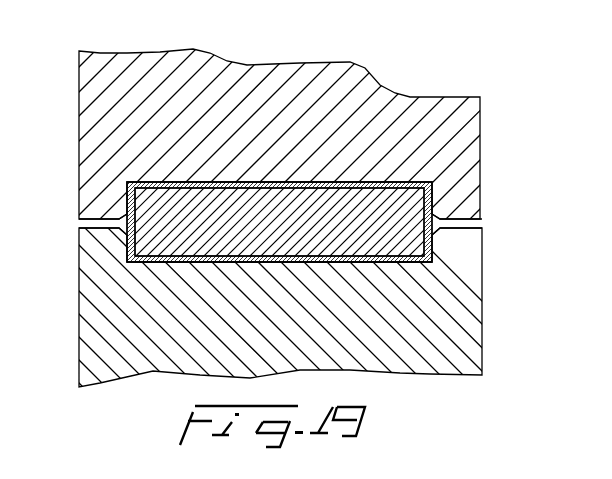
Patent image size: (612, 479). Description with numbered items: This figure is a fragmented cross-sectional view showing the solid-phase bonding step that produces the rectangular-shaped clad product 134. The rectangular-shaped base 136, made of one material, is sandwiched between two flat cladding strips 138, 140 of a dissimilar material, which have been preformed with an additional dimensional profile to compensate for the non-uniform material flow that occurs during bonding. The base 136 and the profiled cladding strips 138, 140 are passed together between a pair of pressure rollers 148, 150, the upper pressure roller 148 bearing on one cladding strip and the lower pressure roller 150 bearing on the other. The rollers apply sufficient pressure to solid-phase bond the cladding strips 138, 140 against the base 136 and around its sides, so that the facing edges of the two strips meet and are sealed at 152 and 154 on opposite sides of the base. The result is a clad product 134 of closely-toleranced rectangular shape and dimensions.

The clad product 134 is at (367, 178).
The rectangular-shaped base 136 is at (298, 205).
The cladding strip 138 is at (243, 180).
The cladding strip 140 is at (176, 263).
The pressure roller 148 is at (170, 82).
The pressure roller 150 is at (435, 360).
The sealed facing edge 152 is at (446, 233).
The sealed facing edge 154 is at (117, 228).